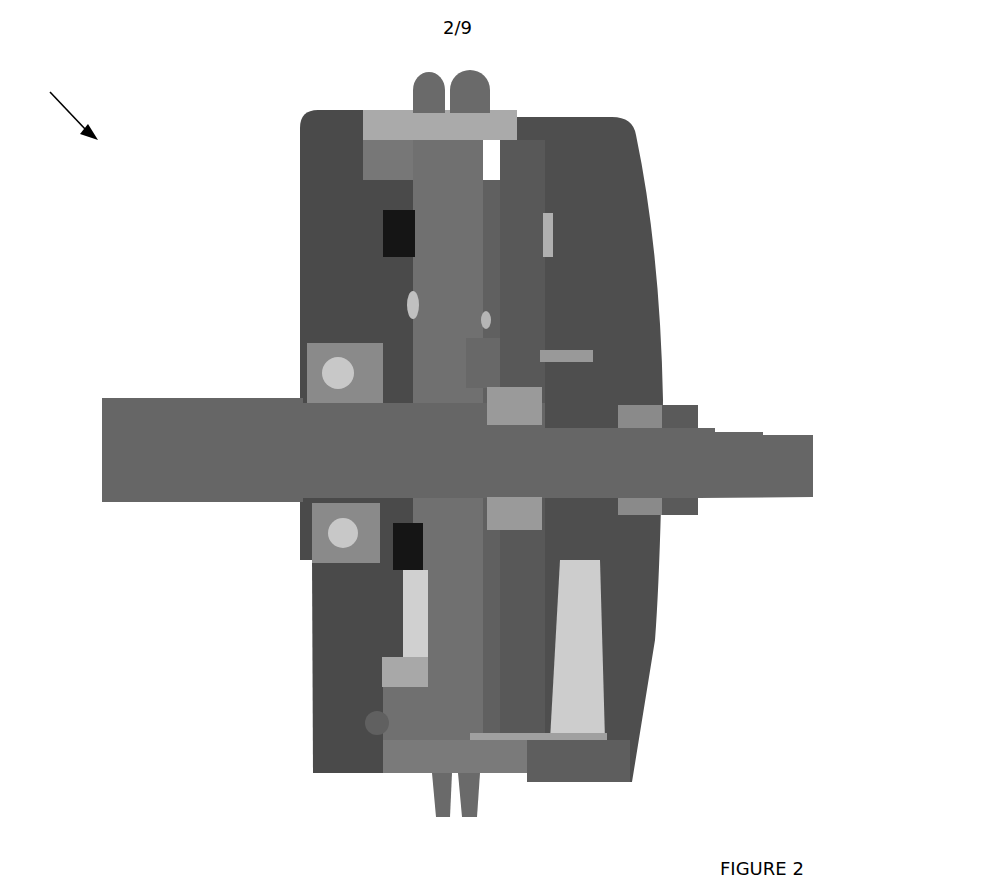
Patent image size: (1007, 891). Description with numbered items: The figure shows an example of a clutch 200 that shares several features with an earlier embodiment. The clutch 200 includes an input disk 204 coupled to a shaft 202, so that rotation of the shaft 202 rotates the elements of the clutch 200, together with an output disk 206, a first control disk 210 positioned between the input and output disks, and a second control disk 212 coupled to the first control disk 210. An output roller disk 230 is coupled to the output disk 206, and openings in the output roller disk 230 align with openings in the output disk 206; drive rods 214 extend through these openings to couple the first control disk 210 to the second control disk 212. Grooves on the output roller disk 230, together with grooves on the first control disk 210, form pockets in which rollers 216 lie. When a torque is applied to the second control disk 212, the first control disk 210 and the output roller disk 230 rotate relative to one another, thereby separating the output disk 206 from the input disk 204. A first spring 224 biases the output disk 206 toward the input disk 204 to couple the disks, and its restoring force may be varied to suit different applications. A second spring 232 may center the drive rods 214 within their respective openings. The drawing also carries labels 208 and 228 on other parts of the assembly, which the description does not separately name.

The clutch 200 is at (57, 107).
The shaft 202 is at (763, 435).
The input disk 204 is at (658, 238).
The output disk 206 is at (422, 76).
The brake plate 208 is at (520, 118).
The first control disk 210 is at (530, 223).
The second control disk 212 is at (300, 185).
The drive rods 214 is at (395, 215).
The rollers 216 is at (484, 223).
The first spring 224 is at (383, 412).
The collar 228 is at (682, 408).
The output roller disk 230 is at (484, 362).
The second spring 232 is at (362, 733).